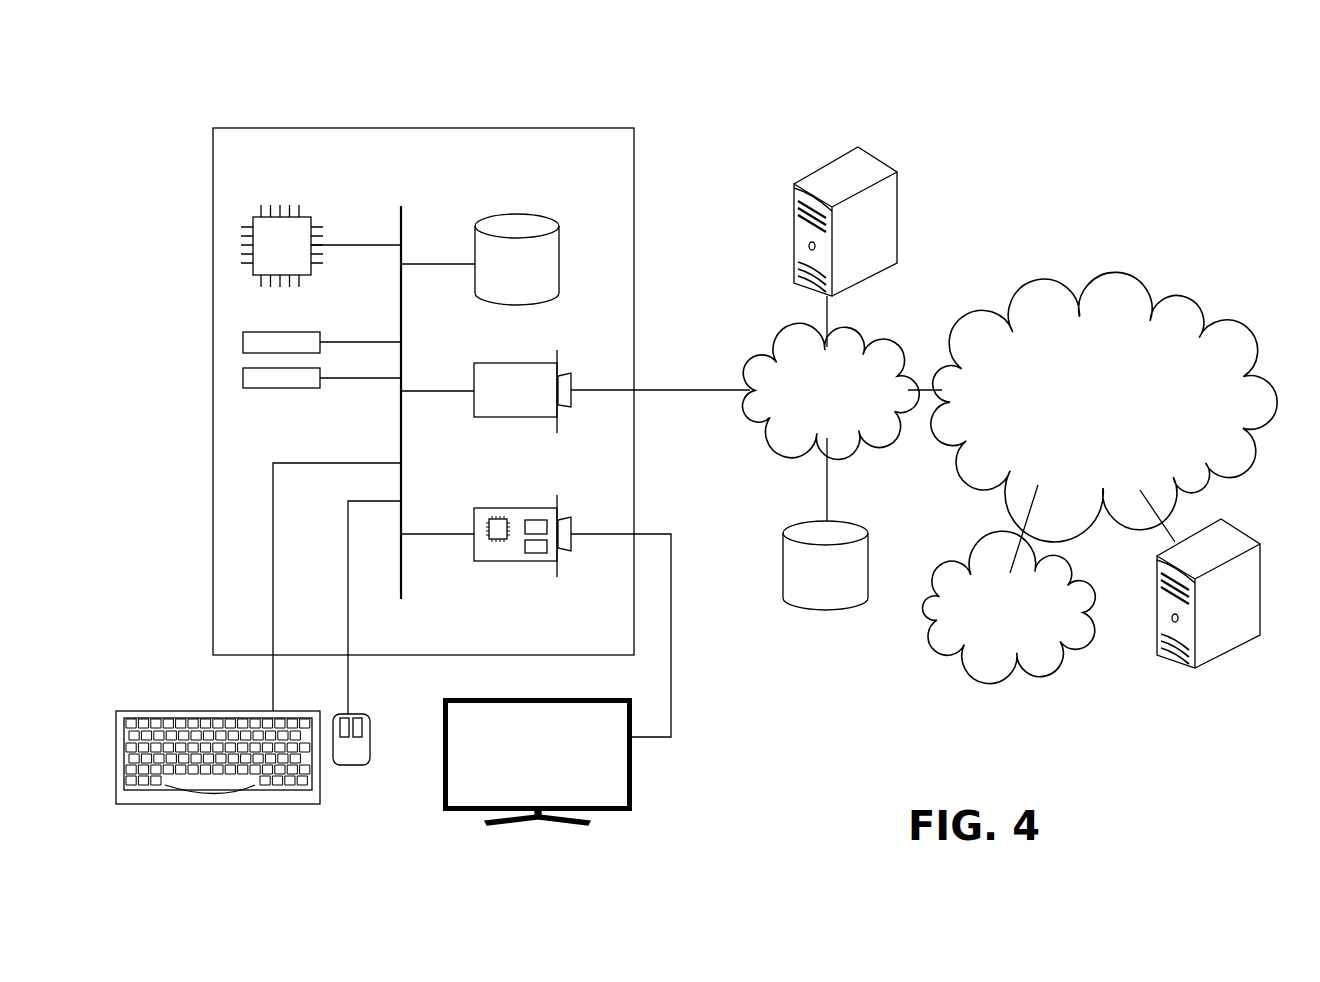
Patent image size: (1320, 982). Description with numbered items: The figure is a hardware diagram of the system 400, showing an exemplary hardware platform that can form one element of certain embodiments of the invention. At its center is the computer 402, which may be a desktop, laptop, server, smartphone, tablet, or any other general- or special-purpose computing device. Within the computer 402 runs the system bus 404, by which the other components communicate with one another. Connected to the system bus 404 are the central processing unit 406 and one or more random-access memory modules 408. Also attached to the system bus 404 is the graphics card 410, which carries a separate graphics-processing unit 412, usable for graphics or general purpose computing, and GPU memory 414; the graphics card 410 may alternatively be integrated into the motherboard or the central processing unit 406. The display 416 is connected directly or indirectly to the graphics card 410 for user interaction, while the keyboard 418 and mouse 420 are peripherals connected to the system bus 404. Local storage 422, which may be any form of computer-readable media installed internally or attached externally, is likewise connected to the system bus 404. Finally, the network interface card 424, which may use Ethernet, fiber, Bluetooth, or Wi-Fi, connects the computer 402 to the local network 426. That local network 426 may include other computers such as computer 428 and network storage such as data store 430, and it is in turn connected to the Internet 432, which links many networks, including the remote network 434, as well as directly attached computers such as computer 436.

The system 400 is at (286, 91).
The computer 402 is at (588, 127).
The system bus 404 is at (402, 217).
The central processing unit 406 is at (306, 215).
The random-access memory modules 408 is at (320, 377).
The graphics card 410 is at (547, 599).
The graphics-processing unit 412 is at (497, 539).
The GPU memory 414 is at (533, 553).
The display 416 is at (633, 792).
The keyboard 418 is at (220, 805).
The mouse 420 is at (348, 767).
The local storage 422 is at (562, 247).
The network interface card 424 is at (473, 372).
The local network 426 is at (880, 348).
The computer 428 is at (885, 160).
The data store 430 is at (860, 523).
The Internet 432 is at (1143, 312).
The remote network 434 is at (1062, 567).
The computer 436 is at (1235, 523).